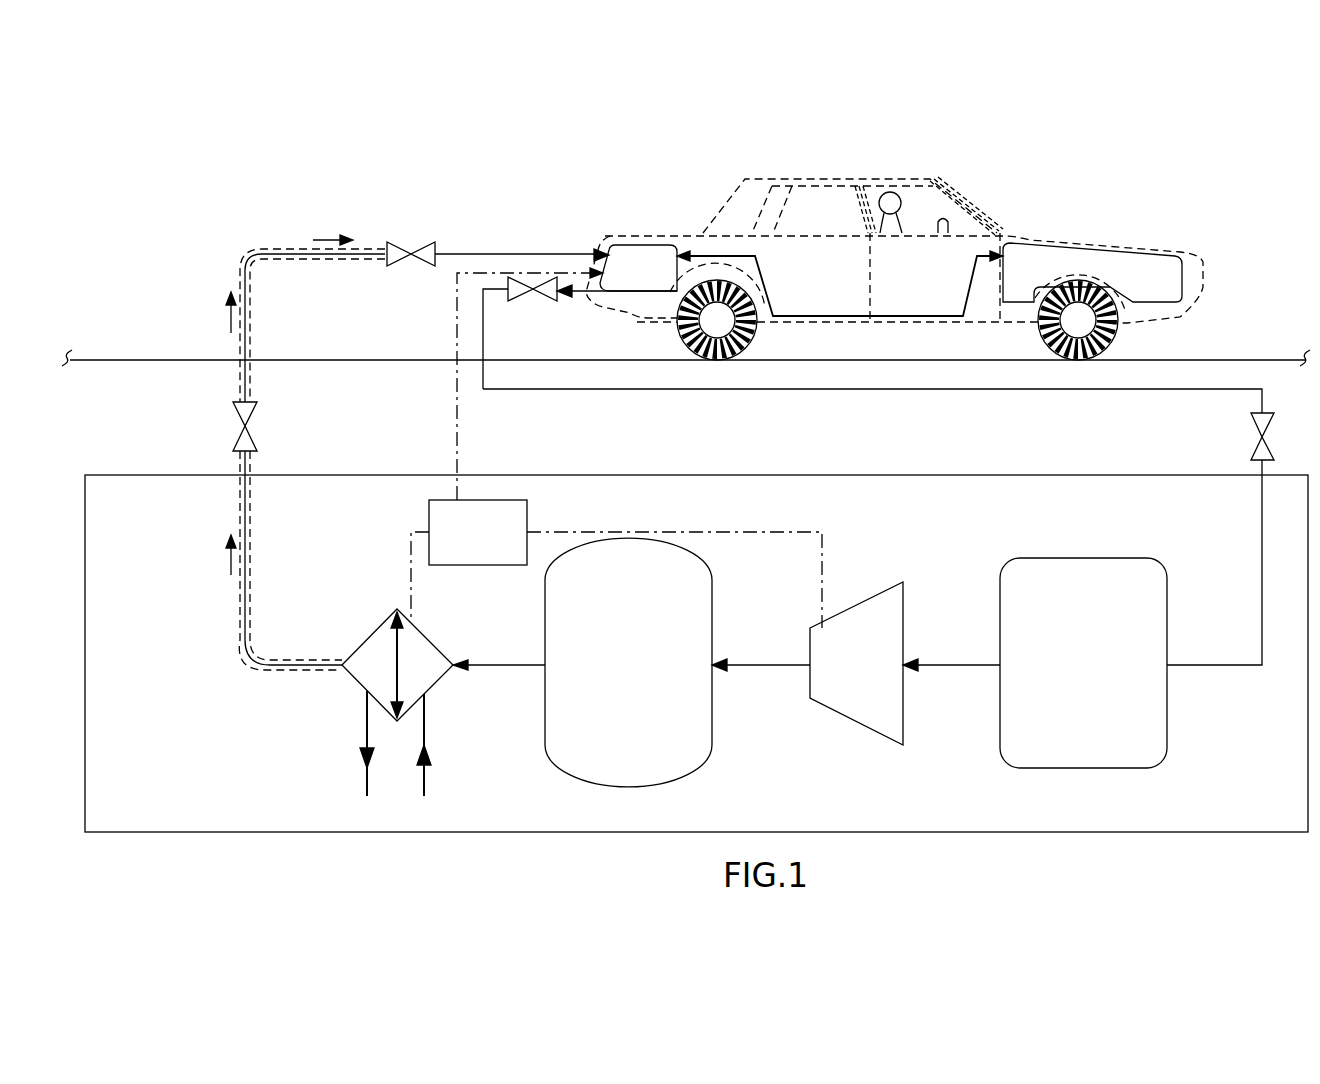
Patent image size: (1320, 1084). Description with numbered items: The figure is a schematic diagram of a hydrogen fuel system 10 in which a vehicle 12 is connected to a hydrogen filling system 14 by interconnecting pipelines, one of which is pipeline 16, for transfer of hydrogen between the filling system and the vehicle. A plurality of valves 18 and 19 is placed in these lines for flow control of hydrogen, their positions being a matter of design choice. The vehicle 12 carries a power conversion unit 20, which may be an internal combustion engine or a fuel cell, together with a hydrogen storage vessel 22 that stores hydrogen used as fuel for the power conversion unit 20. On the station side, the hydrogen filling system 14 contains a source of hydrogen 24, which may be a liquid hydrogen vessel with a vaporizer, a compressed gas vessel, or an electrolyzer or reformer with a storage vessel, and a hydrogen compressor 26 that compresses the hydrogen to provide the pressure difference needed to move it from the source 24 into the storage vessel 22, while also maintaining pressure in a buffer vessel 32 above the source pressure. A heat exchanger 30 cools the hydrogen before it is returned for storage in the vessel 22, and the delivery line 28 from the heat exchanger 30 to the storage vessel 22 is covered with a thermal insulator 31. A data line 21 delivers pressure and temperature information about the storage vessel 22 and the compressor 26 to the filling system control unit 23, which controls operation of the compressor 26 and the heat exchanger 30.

The hydrogen fuel system 10 is at (150, 125).
The vehicle 12 is at (968, 209).
The hydrogen filling system 14 is at (140, 474).
The interconnecting pipeline 16 is at (965, 290).
The valve 18 is at (419, 249).
The valve 19 is at (547, 303).
The power conversion unit 20 is at (1100, 262).
The data line 21 is at (455, 392).
The hydrogen storage vessel 22 is at (646, 244).
The filling system control unit 23 is at (492, 545).
The source of hydrogen 24 is at (1100, 676).
The hydrogen compressor 26 is at (880, 677).
The conduit 28 is at (288, 250).
The heat exchanger 30 is at (366, 640).
The thermal insulator 31 is at (240, 258).
The buffer vessel 32 is at (645, 676).